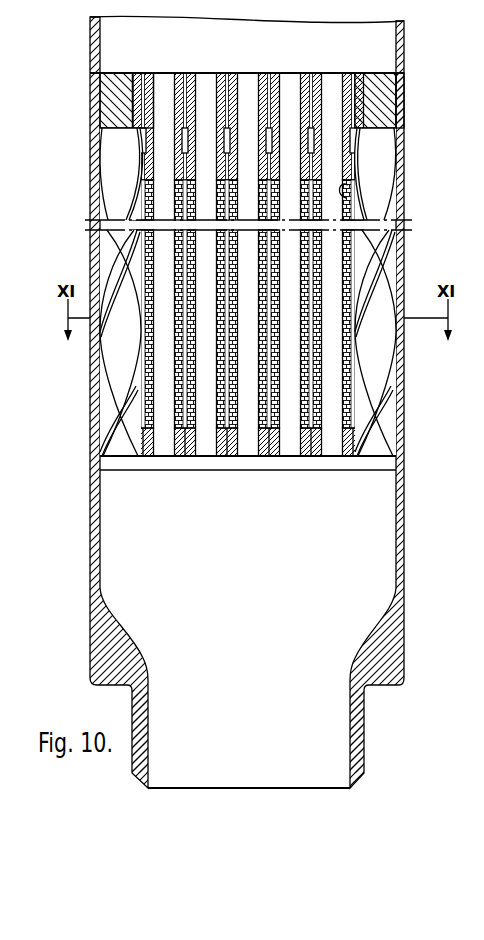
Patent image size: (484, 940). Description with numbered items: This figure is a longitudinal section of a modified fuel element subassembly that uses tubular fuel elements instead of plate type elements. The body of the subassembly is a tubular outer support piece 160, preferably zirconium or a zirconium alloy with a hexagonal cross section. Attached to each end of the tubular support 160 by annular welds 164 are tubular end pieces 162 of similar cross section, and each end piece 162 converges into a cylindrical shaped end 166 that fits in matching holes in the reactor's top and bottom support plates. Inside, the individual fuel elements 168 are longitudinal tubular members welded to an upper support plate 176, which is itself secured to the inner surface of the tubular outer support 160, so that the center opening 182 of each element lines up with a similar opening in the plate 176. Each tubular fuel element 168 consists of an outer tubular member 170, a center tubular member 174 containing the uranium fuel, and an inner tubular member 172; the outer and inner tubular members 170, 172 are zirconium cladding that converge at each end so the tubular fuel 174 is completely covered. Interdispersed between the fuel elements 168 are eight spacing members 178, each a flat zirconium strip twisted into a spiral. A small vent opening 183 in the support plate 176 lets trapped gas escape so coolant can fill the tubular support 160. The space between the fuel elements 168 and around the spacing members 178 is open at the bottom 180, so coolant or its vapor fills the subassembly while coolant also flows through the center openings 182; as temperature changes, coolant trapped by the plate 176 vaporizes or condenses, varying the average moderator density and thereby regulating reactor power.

The tubular outer support piece 160 is at (404, 112).
The tubular end piece 162 is at (402, 42).
The annular weld 164 is at (407, 78).
The cylindrical shaped end 166 is at (355, 748).
The tubular fuel element 168 is at (358, 372).
The outer tubular member 170 is at (348, 194).
The inner tubular member 172 is at (352, 164).
The center tubular member 174 is at (349, 180).
The upper support plate 176 is at (120, 73).
The spacing member 178 is at (110, 153).
The bottom of the fuel element subassembly 180 is at (374, 448).
The center opening 182 is at (335, 78).
The vent opening 183 is at (134, 73).